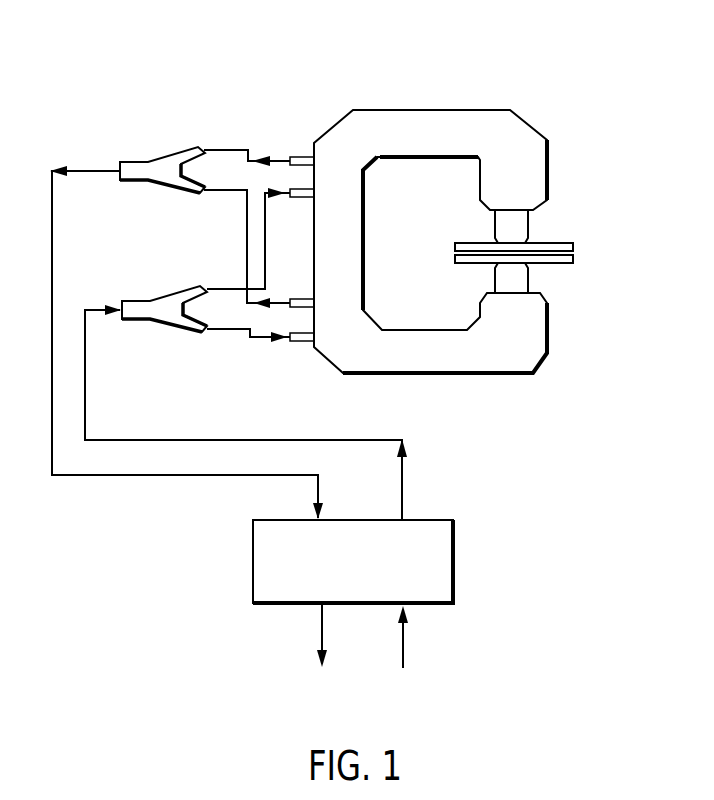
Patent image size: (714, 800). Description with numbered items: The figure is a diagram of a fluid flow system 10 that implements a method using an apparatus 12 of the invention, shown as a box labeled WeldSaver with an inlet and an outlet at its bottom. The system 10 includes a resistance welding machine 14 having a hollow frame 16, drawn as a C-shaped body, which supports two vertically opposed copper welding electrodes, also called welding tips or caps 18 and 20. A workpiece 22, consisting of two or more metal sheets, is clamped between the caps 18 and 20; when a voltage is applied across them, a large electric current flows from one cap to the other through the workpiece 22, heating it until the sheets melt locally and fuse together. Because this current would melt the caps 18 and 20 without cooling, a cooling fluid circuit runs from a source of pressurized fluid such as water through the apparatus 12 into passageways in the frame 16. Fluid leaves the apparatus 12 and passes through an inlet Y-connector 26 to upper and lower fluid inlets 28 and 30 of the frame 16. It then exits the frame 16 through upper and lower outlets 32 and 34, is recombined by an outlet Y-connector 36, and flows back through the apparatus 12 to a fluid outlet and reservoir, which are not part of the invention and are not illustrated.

The fluid flow system 10 is at (107, 66).
The apparatus 12 is at (367, 589).
The resistance welding machine 14 is at (469, 68).
The hollow frame 16 is at (562, 148).
The welding cap 18 is at (523, 229).
The welding cap 20 is at (521, 278).
The workpiece 22 is at (578, 252).
The inlet Y-connector 26 is at (168, 303).
The upper fluid inlet 28 is at (303, 197).
The lower fluid inlet 30 is at (308, 342).
The upper outlet 32 is at (296, 157).
The lower outlet 34 is at (302, 300).
The outlet Y-connector 36 is at (170, 162).